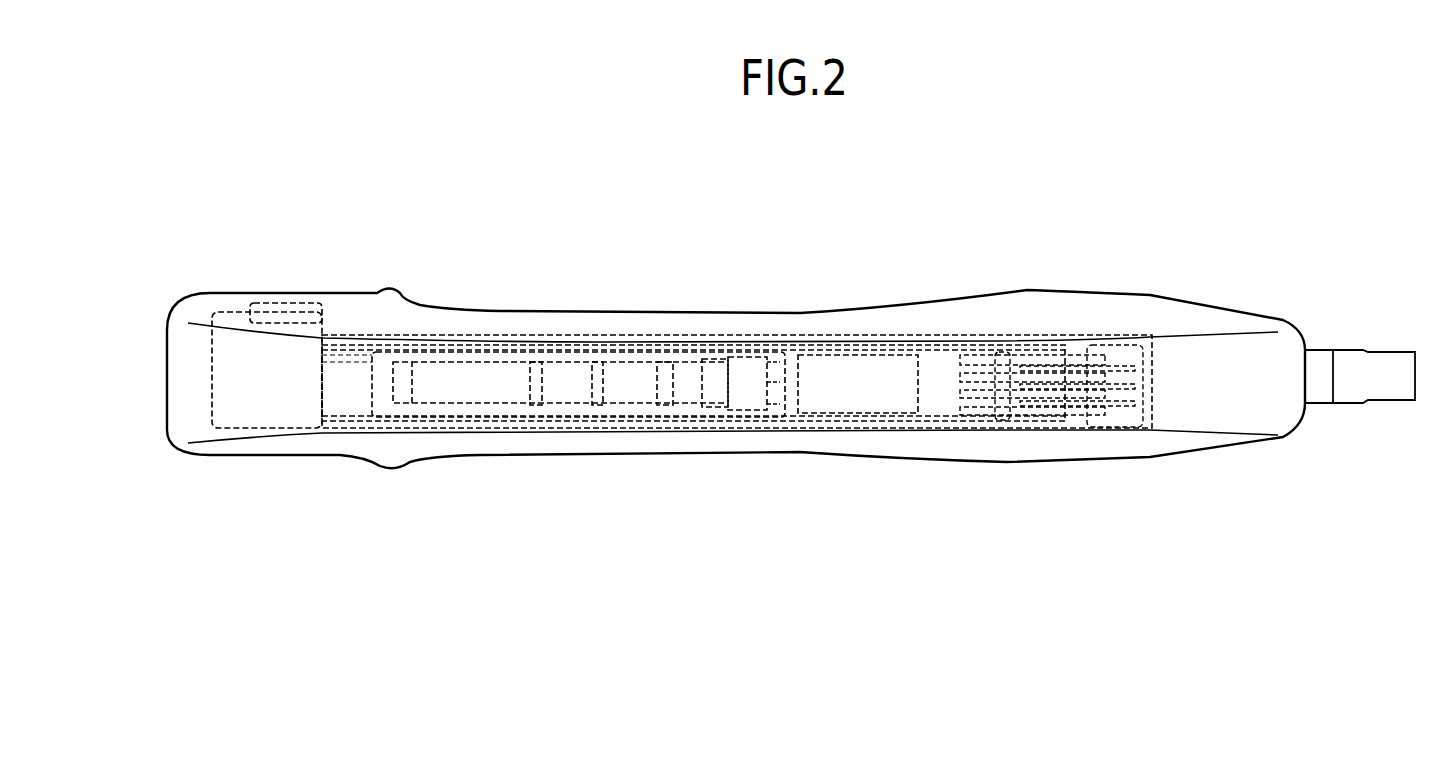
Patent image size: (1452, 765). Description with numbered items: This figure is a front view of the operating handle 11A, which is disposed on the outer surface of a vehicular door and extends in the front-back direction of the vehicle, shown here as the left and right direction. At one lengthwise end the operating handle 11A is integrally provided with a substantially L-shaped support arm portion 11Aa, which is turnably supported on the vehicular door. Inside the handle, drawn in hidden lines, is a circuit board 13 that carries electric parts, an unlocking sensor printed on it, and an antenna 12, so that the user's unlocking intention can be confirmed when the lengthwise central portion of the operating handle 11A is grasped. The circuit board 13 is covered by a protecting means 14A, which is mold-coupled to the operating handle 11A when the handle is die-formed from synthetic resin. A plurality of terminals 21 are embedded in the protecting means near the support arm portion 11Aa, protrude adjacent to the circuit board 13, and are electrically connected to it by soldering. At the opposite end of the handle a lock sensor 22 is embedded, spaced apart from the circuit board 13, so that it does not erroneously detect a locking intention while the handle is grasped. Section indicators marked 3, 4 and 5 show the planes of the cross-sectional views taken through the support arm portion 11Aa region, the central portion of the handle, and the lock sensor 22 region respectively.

The operating handle 11A is at (757, 326).
The support arm portion 11Aa is at (1355, 370).
The antenna 12 is at (633, 378).
The circuit board 13 is at (943, 403).
The protecting means 14A is at (735, 443).
The terminals 21 is at (1113, 363).
The lock sensor 22 is at (285, 313).
The section line of FIG. 3 is at (174, 382).
The section line of FIG. 4 is at (628, 238).
The section line of FIG. 5 is at (280, 224).